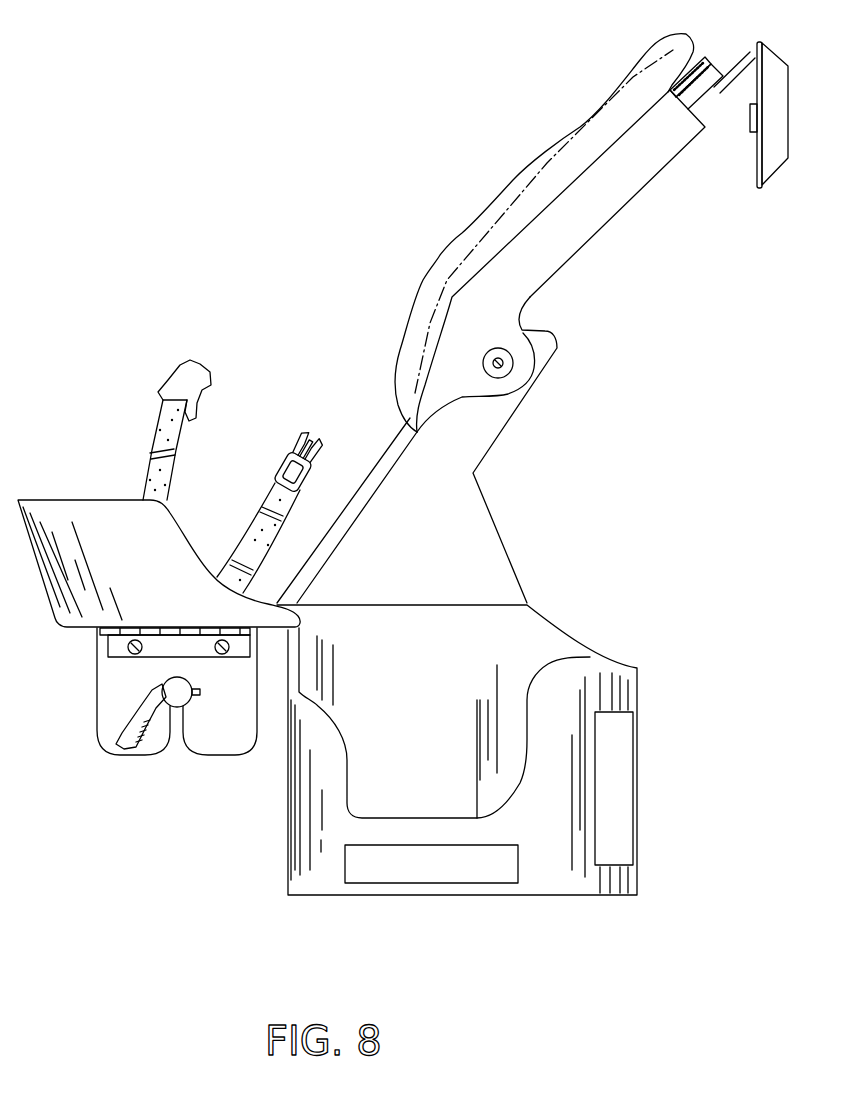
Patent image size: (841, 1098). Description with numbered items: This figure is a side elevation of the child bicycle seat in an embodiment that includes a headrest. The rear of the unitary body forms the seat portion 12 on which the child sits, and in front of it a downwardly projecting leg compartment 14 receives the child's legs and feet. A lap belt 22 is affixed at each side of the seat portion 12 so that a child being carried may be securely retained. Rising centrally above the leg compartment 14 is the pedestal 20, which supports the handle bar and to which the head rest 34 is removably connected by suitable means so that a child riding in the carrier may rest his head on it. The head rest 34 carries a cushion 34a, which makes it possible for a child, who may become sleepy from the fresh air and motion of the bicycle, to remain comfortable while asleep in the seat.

The seat portion 12 is at (150, 567).
The leg compartment 14 is at (413, 767).
The pedestal 20 is at (478, 452).
The lap belt 22 is at (153, 430).
The head rest 34 is at (587, 223).
The cushion 34a is at (552, 153).